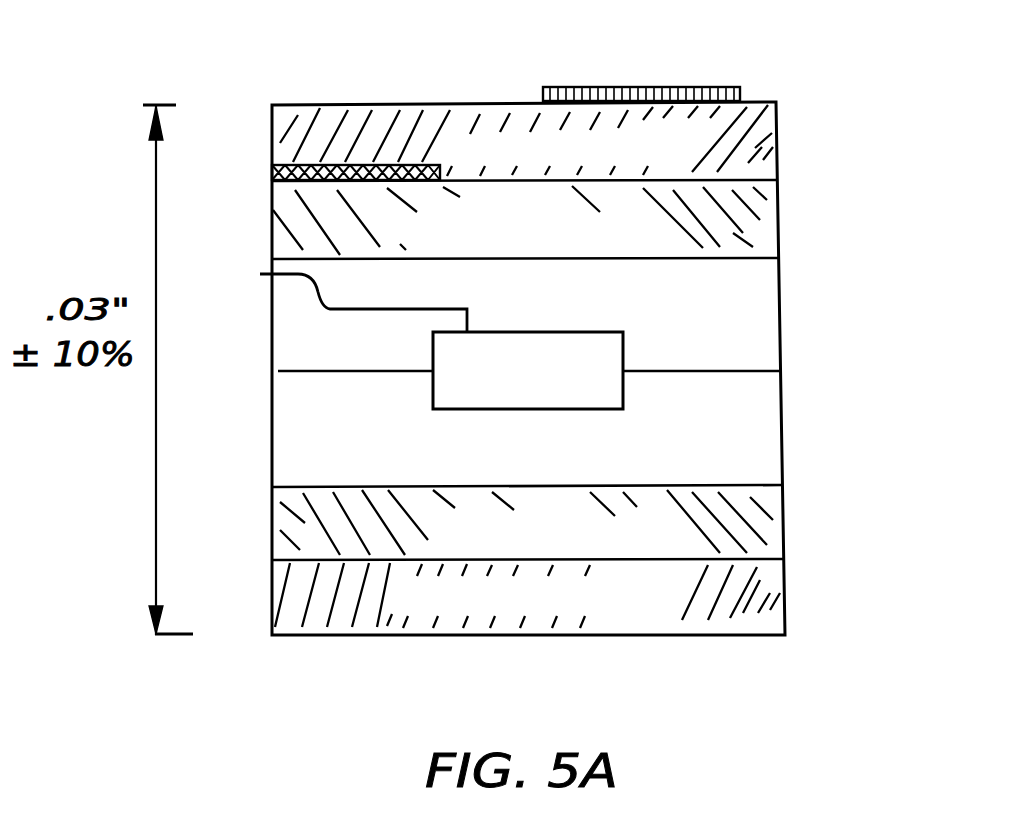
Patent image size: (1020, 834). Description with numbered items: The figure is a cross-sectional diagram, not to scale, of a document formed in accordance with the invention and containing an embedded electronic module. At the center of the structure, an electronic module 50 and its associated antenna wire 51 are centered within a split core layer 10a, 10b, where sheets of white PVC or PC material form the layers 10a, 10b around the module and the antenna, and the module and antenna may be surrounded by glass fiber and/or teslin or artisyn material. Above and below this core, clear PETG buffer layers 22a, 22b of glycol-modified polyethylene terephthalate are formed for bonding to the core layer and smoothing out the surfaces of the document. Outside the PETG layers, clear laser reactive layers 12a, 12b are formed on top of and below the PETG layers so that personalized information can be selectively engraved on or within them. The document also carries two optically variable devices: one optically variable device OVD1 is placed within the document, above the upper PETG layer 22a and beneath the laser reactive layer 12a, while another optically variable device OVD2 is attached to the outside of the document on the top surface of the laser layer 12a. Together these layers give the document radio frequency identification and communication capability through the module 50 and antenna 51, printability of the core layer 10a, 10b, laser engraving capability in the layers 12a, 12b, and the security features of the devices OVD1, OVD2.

The clear laser reactive layer 12a is at (780, 134).
The clear PETG buffer layer 22a is at (780, 214).
The split core layer 10a is at (766, 312).
The split core layer 10b is at (770, 440).
The clear PETG buffer layer 22b is at (783, 526).
The clear laser reactive layer 12b is at (785, 604).
The electronic module 50 is at (555, 395).
The antenna wire 51 is at (262, 275).
The optically variable device OVD1 is at (272, 175).
The optically variable device OVD2 is at (730, 87).